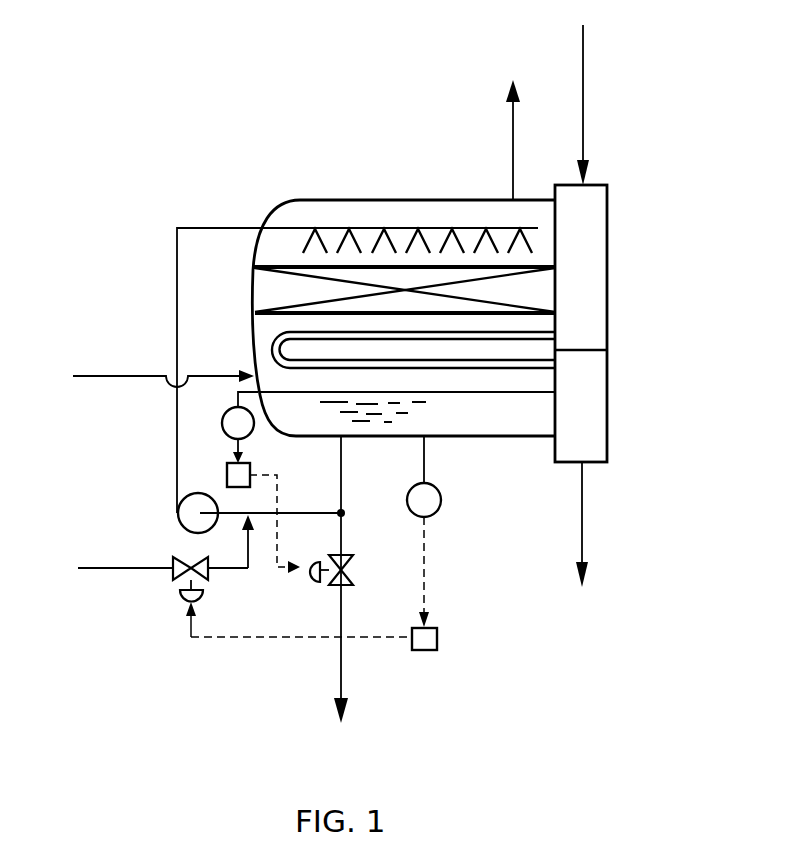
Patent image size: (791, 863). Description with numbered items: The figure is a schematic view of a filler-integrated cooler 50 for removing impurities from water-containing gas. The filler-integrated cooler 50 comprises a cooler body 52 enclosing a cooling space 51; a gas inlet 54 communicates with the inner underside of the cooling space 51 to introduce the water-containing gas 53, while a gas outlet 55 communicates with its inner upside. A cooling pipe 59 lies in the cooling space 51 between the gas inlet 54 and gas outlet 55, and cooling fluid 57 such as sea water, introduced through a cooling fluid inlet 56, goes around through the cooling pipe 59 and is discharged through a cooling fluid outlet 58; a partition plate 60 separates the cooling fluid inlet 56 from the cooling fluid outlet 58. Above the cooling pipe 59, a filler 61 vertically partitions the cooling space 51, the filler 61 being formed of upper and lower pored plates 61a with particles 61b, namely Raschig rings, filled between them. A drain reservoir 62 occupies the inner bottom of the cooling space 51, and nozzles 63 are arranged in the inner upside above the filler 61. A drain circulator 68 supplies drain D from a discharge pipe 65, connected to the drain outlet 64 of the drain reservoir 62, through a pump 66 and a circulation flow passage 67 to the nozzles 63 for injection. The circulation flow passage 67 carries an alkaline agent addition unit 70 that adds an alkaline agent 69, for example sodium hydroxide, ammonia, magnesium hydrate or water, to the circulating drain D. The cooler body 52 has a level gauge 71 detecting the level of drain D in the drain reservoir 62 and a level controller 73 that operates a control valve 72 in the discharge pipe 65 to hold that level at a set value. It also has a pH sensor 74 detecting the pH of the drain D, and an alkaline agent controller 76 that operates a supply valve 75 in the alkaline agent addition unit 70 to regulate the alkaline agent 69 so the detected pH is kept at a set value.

The filler-integrated cooler 50 is at (262, 180).
The cooling space 51 is at (358, 213).
The cooler body 52 is at (412, 200).
The water-containing gas 53 is at (100, 372).
The gas inlet 54 is at (250, 372).
The gas outlet 55 is at (511, 199).
The cooling fluid inlet 56 is at (594, 184).
The cooling fluid 57 is at (583, 90).
The cooling fluid outlet 58 is at (607, 463).
The cooling pipe 59 is at (257, 300).
The partition plate 60 is at (592, 352).
The filler 61 is at (505, 295).
The pored plates 61a is at (537, 264).
The particles 61b is at (527, 293).
The drain reservoir 62 is at (480, 437).
The nozzles 63 is at (331, 228).
The drain outlet 64 is at (342, 443).
The discharge pipe 65 is at (342, 533).
The pump 66 is at (178, 515).
The circulation flow passage 67 is at (177, 247).
The drain circulator 68 is at (166, 435).
The alkaline agent 69 is at (100, 565).
The alkaline agent addition unit 70 is at (158, 598).
The level gauge 71 is at (222, 425).
The control valve 72 is at (352, 582).
The level controller 73 is at (255, 465).
The pH sensor 74 is at (436, 518).
The supply valve 75 is at (205, 595).
The alkaline agent controller 76 is at (437, 650).